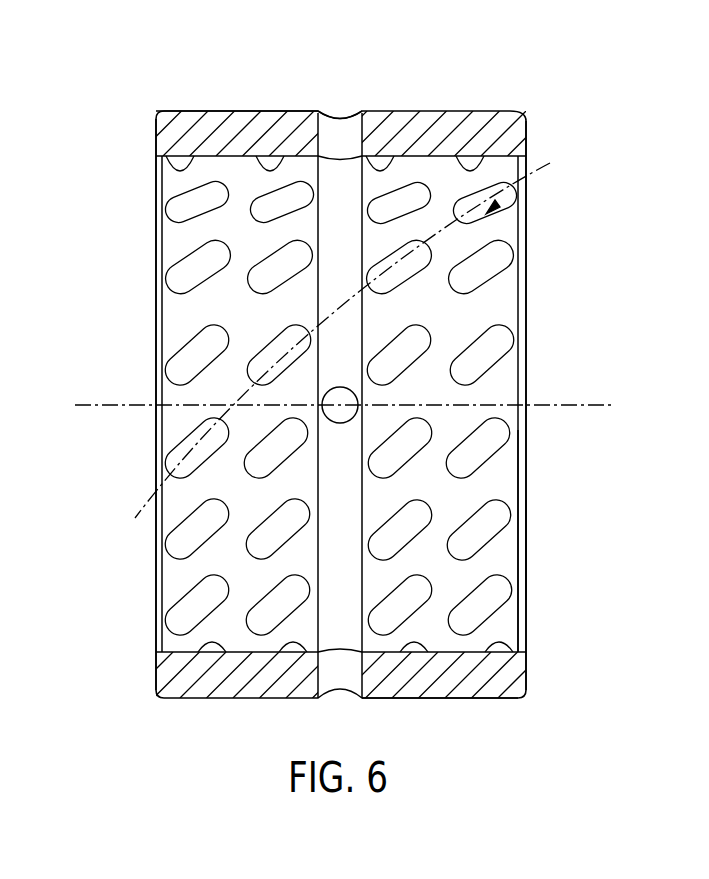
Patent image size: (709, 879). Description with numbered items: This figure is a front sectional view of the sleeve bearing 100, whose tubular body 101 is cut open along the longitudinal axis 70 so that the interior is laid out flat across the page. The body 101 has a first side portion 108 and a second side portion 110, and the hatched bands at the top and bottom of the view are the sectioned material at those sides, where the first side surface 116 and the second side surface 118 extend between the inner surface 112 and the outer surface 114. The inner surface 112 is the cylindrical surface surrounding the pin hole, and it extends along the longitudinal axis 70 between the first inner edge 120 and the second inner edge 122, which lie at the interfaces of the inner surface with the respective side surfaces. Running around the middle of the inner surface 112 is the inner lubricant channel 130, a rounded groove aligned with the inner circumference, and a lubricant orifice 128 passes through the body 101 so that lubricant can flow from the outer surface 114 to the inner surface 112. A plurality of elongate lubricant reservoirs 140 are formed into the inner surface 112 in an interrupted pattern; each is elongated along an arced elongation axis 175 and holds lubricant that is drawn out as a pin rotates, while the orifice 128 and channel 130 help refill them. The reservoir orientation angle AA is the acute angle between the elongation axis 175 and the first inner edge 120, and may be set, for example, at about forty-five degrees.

The sleeve bearing 100 is at (476, 89).
The tubular body 101 is at (165, 138).
The first side portion 108 is at (600, 553).
The second side portion 110 is at (131, 429).
The inner surface 112 is at (508, 621).
The outer surface 114 is at (447, 700).
The first side surface 116 is at (530, 678).
The second side surface 118 is at (156, 678).
The first inner edge 120 is at (527, 278).
The second inner edge 122 is at (156, 590).
The lubricant orifice 128 is at (345, 138).
The inner lubricant channel 130 is at (332, 170).
The lubricant reservoir 140 is at (192, 208).
The elongation axis 175 is at (547, 172).
The longitudinal axis 70 is at (540, 401).
The reservoir orientation angle AA is at (510, 218).